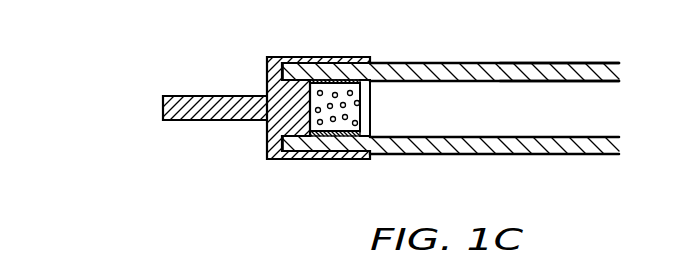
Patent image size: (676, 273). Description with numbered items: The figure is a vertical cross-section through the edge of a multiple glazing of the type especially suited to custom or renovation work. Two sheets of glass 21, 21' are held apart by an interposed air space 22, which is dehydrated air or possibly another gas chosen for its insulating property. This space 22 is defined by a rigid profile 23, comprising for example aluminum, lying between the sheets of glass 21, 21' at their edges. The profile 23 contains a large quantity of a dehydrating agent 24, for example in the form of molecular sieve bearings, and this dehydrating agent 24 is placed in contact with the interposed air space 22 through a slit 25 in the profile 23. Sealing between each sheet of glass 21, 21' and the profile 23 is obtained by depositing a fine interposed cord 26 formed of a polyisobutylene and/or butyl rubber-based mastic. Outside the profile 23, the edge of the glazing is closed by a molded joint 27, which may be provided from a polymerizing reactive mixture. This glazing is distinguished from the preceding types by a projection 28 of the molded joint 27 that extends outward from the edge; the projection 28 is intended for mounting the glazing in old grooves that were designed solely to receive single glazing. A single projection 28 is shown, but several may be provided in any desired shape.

The sheet of glass 21 is at (494, 58).
The sheet of glass 21' is at (494, 165).
The interposed air space 22 is at (538, 95).
The rigid profile 23 is at (368, 88).
The dehydrating agent 24 is at (366, 120).
The slit 25 is at (298, 78).
The interposed cord 26 is at (352, 82).
The molded joint 27 is at (277, 127).
The projection 28 is at (205, 101).